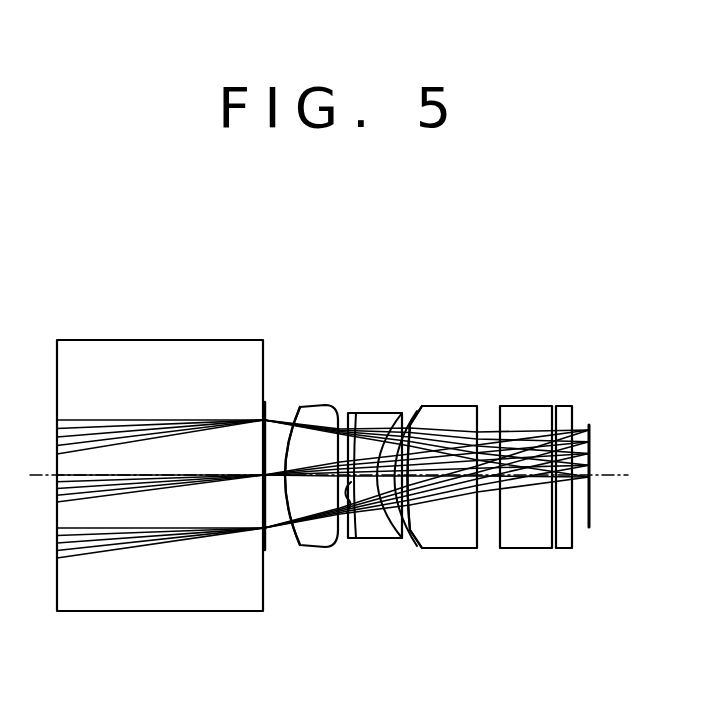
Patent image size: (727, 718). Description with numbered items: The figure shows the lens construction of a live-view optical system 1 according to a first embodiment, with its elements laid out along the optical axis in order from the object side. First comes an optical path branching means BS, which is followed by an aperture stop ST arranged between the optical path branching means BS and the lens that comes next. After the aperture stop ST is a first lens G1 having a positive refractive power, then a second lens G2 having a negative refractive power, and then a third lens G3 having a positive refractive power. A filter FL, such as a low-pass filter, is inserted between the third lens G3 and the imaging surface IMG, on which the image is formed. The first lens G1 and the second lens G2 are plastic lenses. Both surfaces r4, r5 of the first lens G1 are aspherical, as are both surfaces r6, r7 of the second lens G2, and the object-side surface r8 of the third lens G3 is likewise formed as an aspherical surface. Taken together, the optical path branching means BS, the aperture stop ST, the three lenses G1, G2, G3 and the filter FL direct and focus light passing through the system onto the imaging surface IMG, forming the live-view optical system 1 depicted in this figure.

The live-view optical system 1 is at (493, 287).
The optical path branching means BS is at (117, 363).
The aperture stop ST is at (267, 408).
The first lens G1 is at (318, 413).
The second lens G2 is at (373, 413).
The third lens G3 is at (443, 413).
The filter FL is at (565, 415).
The imaging surface IMG is at (583, 508).
The object-side surface of the first lens r4 is at (276, 497).
The image-side surface of the first lens r5 is at (355, 538).
The object-side surface of the second lens r6 is at (379, 503).
The image-side surface of the second lens r7 is at (392, 520).
The object-side surface of the third lens r8 is at (411, 540).